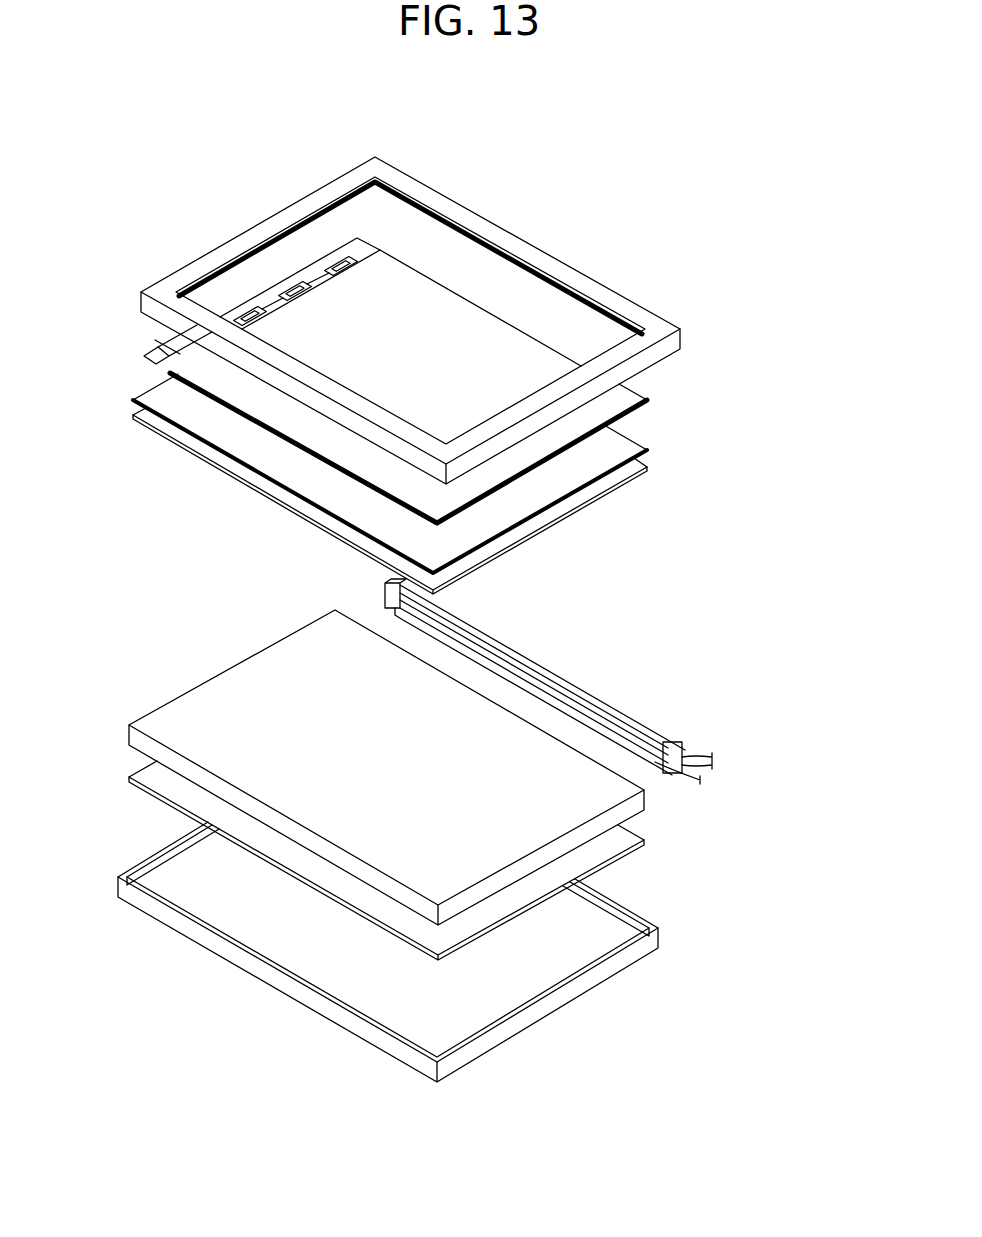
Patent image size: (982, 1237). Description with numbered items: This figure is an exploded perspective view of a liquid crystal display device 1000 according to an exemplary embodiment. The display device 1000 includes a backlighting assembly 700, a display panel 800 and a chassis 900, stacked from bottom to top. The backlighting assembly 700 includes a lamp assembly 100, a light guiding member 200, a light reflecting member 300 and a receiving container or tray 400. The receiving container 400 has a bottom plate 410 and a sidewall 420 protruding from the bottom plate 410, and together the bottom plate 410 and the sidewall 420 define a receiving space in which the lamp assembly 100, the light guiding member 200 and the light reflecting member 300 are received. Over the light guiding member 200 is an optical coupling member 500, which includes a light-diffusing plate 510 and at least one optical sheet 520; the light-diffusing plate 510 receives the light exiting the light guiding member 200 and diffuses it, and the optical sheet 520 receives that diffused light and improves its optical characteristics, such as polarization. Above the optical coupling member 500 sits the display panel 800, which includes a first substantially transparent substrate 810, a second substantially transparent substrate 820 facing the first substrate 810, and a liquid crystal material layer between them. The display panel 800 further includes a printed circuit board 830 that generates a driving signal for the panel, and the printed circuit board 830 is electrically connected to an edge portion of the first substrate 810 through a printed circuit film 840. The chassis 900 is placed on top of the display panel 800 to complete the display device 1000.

The display device 1000 is at (478, 115).
The chassis 900 is at (652, 318).
The display panel 800 is at (452, 380).
The second substantially transparent substrate 820 is at (630, 392).
The first substantially transparent substrate 810 is at (650, 403).
The printed circuit film 840 is at (168, 342).
The printed circuit board 830 is at (145, 356).
The optical coupling member 500 is at (460, 484).
The optical sheet 520 is at (609, 464).
The light-diffusing plate 510 is at (600, 488).
The lamp assembly 100 is at (622, 688).
The light guiding member 200 is at (165, 703).
The light reflecting member 300 is at (152, 772).
The receiving container 400 is at (432, 952).
The sidewall 420 is at (652, 920).
The bottom plate 410 is at (468, 1013).
The backlighting assembly 700 is at (781, 1050).